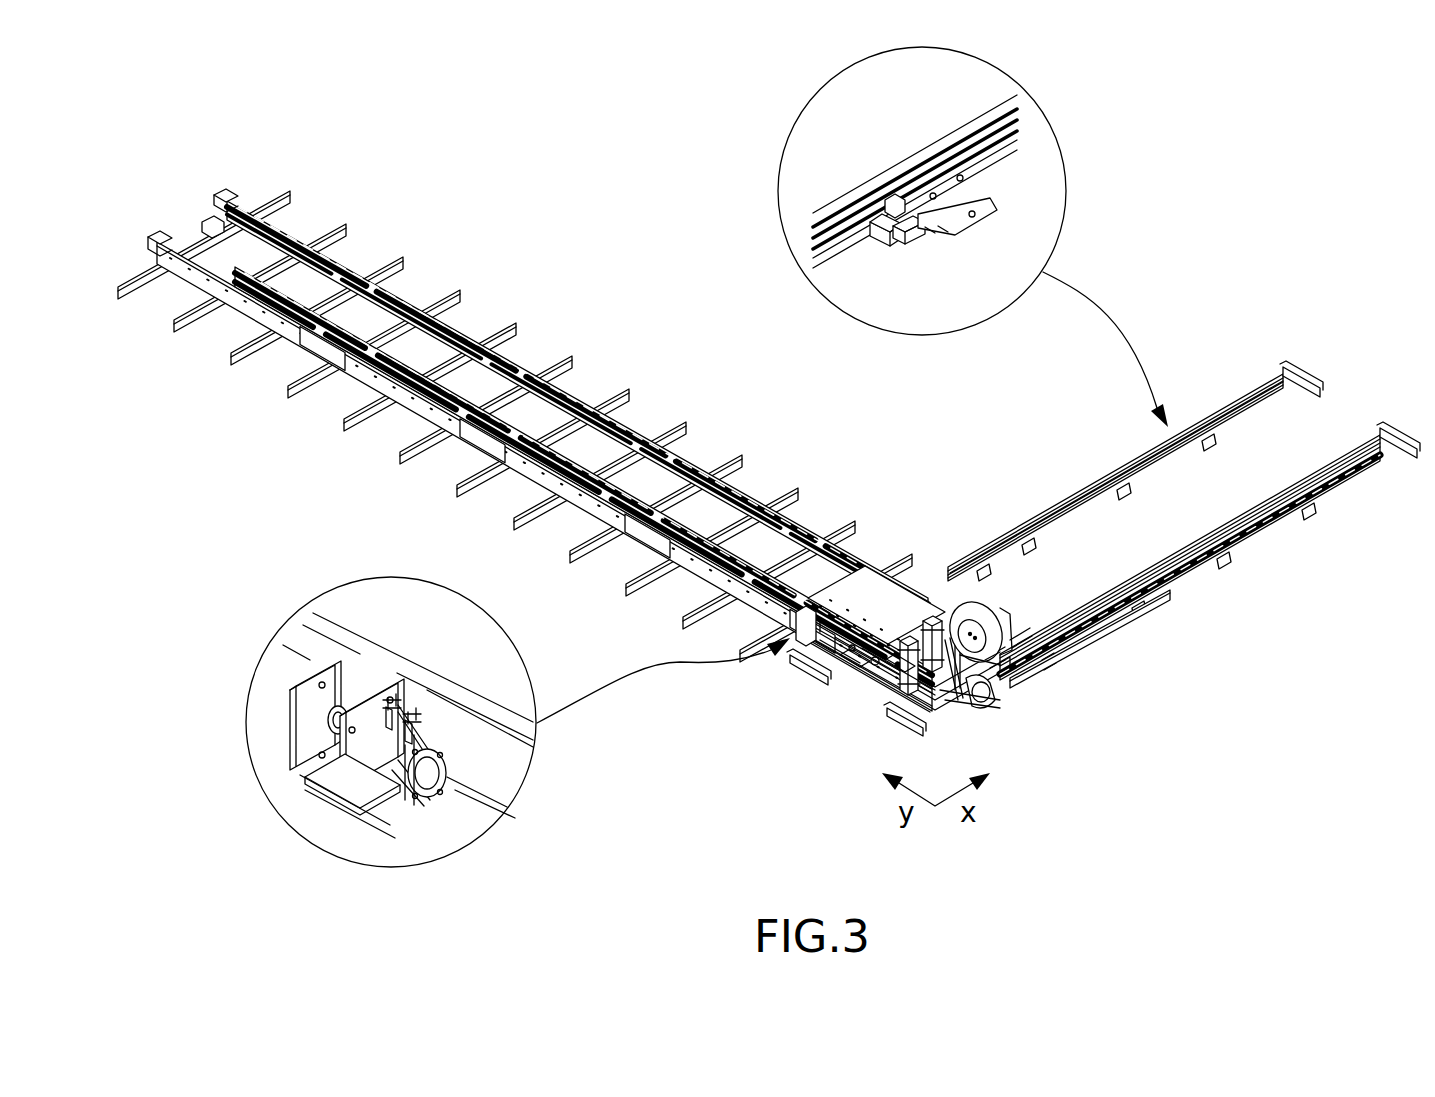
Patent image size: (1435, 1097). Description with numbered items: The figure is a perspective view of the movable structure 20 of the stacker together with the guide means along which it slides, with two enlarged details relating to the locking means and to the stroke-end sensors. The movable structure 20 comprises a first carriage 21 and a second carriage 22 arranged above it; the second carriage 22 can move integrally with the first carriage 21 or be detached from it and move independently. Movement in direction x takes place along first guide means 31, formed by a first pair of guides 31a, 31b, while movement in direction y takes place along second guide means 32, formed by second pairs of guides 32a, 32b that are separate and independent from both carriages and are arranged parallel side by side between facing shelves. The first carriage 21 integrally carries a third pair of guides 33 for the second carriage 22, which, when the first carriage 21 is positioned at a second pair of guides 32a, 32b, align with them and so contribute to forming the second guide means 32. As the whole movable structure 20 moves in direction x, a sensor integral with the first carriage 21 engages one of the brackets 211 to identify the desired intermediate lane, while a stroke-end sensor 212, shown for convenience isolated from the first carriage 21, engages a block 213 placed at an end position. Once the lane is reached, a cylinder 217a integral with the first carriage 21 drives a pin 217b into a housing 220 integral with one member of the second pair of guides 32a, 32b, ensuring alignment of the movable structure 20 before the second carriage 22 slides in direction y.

The movable structure 20 is at (840, 700).
The first carriage 21 is at (807, 670).
The second carriage 22 is at (893, 617).
The bracket 211 is at (1006, 545).
The stroke-end sensor 212 is at (912, 238).
The block 213 is at (880, 215).
The cylinder 217a is at (395, 785).
The pin 217b is at (355, 700).
The housing 220 is at (305, 765).
The first guide means 31 is at (1348, 380).
The first guide 31a is at (1085, 497).
The first guide 31b is at (1200, 561).
The second guide means 32 is at (195, 196).
The second guide 32a is at (622, 532).
The second guide 32b is at (724, 488).
The third pair of guides 33 is at (837, 581).